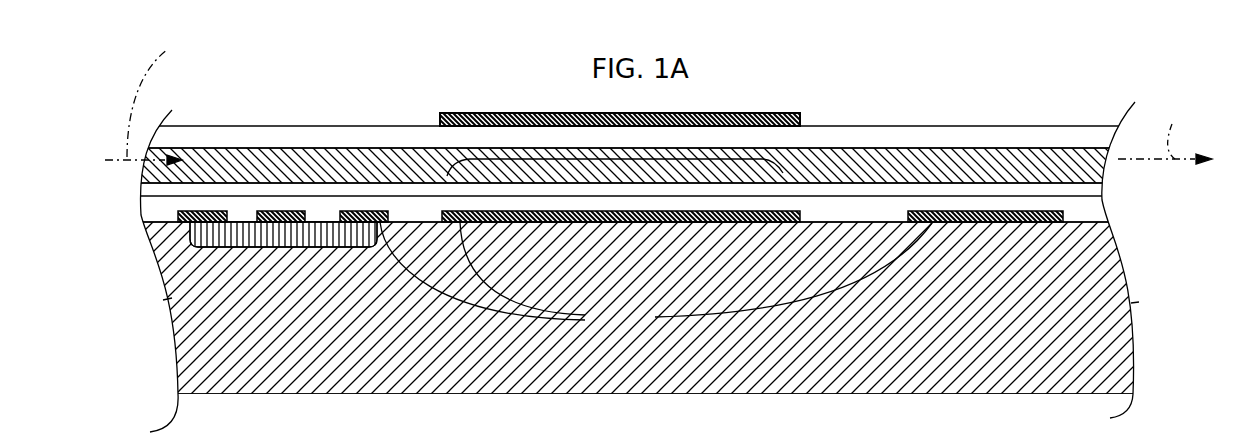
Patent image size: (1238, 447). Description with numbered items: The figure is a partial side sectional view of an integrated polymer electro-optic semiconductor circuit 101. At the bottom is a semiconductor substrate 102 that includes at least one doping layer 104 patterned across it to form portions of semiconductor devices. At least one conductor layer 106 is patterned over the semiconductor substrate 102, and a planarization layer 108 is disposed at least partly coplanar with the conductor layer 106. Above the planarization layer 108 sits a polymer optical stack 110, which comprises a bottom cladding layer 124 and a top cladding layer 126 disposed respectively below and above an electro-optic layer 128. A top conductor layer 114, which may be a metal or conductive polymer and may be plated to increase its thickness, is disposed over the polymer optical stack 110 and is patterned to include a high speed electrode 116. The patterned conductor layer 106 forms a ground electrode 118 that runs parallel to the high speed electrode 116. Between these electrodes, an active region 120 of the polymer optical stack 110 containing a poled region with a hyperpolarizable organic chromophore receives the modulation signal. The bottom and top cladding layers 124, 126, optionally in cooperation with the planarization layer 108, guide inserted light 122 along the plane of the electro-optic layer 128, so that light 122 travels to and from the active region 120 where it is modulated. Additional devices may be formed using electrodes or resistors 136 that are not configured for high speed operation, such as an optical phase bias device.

The integrated polymer electro-optic semiconductor circuit 101 is at (995, 91).
The semiconductor substrate 102 is at (1140, 223).
The doping layer 104 is at (290, 248).
The conductor layer 106 is at (656, 276).
The planarization layer 108 is at (1080, 223).
The polymer optical stack 110 is at (1121, 125).
The top conductor layer 114 is at (745, 113).
The high speed electrode 116 is at (460, 113).
The ground electrode 118 is at (1013, 223).
The active region 120 is at (613, 159).
The light 122 is at (658, 102).
The bottom cladding layer 124 is at (842, 198).
The top cladding layer 126 is at (219, 126).
The electro-optic layer 128 is at (263, 148).
The electrodes or resistors 136 is at (684, 223).